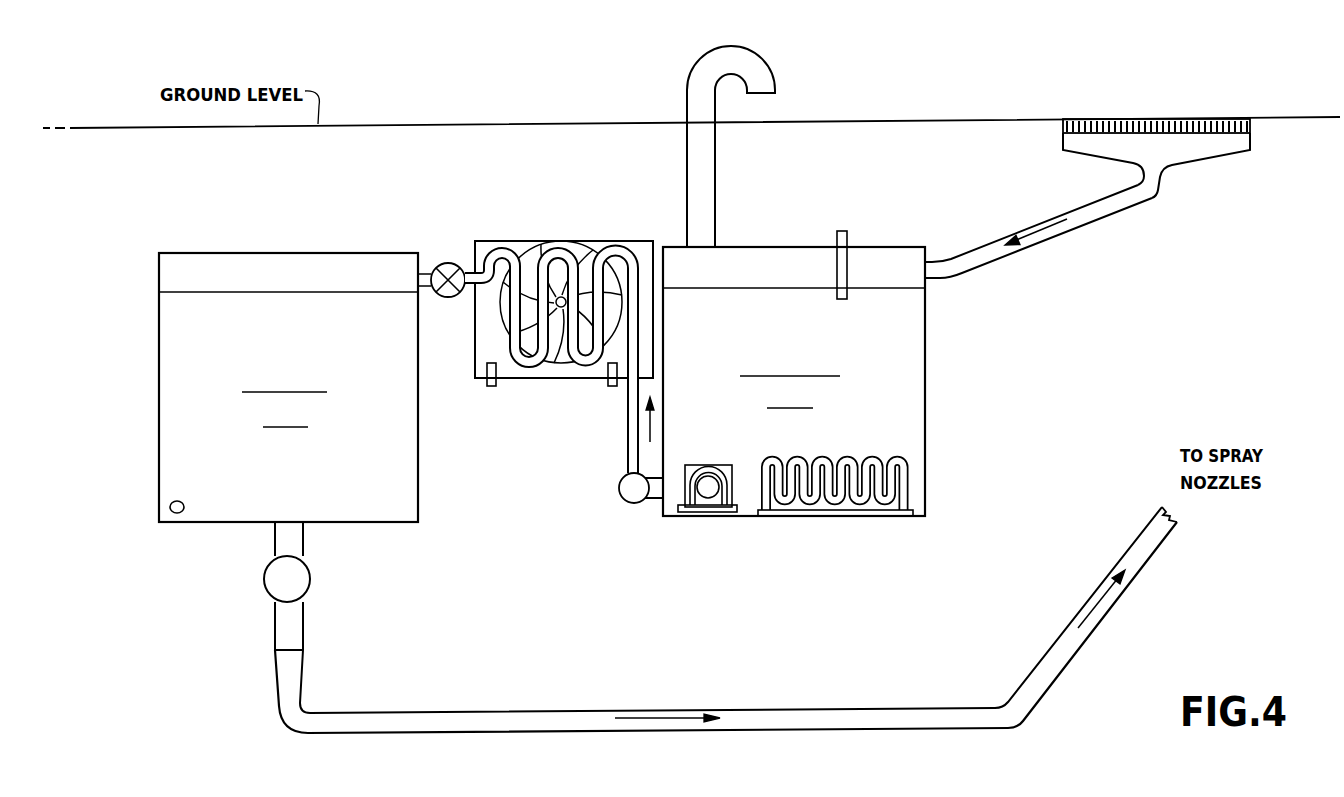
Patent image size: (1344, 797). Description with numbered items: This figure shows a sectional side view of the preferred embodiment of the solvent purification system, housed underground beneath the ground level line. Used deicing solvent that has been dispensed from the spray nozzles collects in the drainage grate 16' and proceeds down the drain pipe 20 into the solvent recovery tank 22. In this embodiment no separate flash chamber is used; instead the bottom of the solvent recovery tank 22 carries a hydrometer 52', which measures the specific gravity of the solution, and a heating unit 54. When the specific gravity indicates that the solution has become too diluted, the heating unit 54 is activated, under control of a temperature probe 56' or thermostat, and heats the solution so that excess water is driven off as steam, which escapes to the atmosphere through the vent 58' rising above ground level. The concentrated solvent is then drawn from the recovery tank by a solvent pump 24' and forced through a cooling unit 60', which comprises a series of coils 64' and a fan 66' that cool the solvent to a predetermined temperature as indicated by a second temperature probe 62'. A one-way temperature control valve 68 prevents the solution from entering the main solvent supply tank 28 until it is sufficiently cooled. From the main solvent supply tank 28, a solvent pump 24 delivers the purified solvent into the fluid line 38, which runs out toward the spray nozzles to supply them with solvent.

The drainage grate 16' is at (1156, 126).
The drain pipe 20 is at (1057, 218).
The solvent recovery tank 22 is at (925, 381).
The solvent pump 24 is at (327, 586).
The solvent pump 24' is at (609, 483).
The main solvent supply tank 28 is at (177, 368).
The fluid line 38 is at (495, 717).
The hydrometer 52' is at (705, 511).
The heater coil 54 is at (910, 495).
The temperature probe 56' is at (837, 245).
The vent 58' is at (711, 137).
The cooling unit 60' is at (569, 306).
The second temperature probe 62' is at (552, 399).
The coils 64' is at (546, 267).
The fan 66' is at (569, 322).
The one-way temperature control valve 68 is at (455, 296).